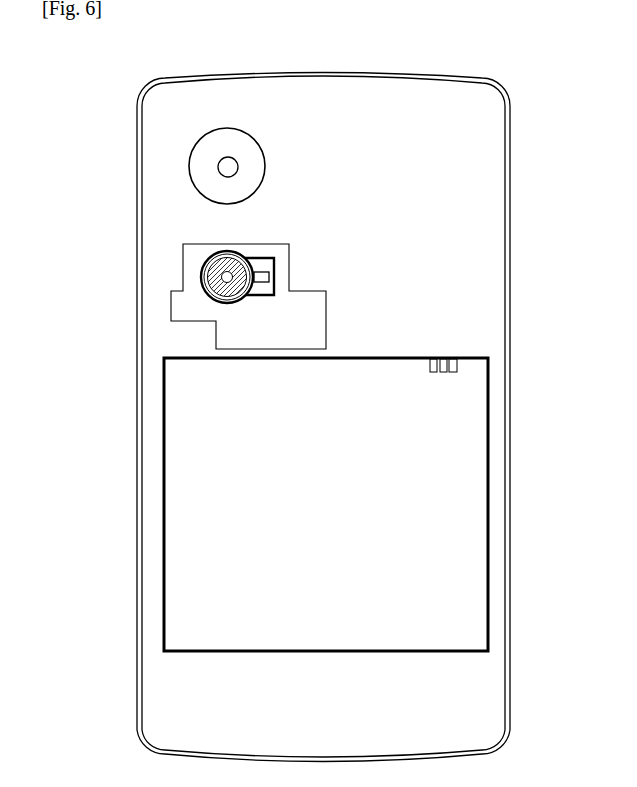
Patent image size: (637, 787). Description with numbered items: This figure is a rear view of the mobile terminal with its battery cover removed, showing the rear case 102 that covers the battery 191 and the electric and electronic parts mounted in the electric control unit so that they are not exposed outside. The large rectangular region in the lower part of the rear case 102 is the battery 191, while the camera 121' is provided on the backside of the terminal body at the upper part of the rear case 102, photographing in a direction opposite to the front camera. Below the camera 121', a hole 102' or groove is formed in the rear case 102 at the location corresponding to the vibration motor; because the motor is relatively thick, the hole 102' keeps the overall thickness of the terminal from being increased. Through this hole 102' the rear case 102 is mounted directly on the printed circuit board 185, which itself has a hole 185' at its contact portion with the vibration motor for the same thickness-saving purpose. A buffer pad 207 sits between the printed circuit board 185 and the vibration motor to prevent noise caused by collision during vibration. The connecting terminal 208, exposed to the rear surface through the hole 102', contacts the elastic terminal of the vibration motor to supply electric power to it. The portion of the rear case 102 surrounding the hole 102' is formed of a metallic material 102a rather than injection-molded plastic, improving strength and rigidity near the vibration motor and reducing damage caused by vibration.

The rear case 102 is at (348, 417).
The hole 102' is at (171, 277).
The metallic material 102a is at (237, 337).
The camera 121' is at (177, 166).
The buffer pad 207 is at (226, 262).
The printed circuit board 185 is at (393, 262).
The hole of the printed circuit board 185' is at (170, 284).
The connecting terminal 208 is at (264, 277).
The battery 191 is at (407, 497).